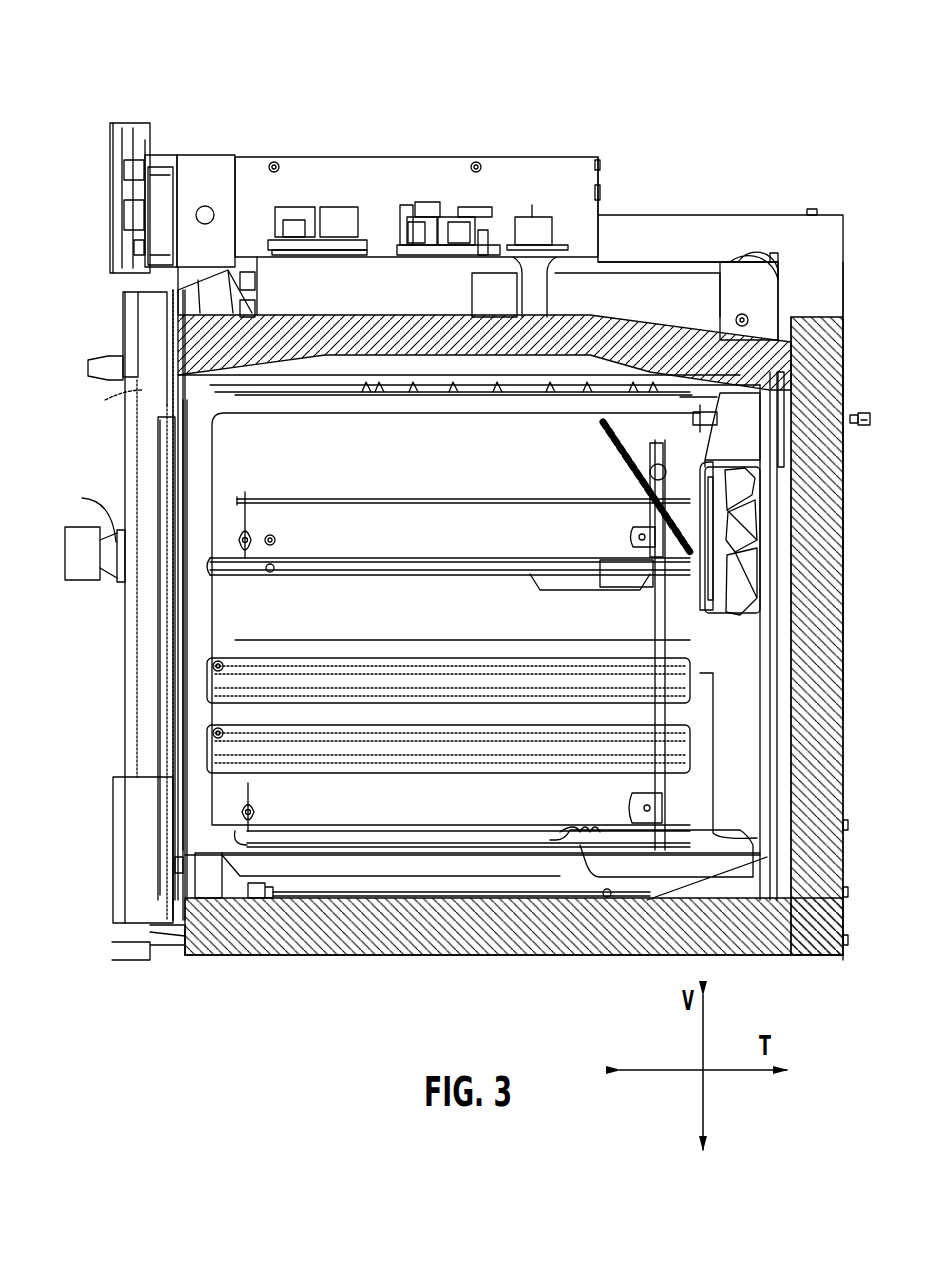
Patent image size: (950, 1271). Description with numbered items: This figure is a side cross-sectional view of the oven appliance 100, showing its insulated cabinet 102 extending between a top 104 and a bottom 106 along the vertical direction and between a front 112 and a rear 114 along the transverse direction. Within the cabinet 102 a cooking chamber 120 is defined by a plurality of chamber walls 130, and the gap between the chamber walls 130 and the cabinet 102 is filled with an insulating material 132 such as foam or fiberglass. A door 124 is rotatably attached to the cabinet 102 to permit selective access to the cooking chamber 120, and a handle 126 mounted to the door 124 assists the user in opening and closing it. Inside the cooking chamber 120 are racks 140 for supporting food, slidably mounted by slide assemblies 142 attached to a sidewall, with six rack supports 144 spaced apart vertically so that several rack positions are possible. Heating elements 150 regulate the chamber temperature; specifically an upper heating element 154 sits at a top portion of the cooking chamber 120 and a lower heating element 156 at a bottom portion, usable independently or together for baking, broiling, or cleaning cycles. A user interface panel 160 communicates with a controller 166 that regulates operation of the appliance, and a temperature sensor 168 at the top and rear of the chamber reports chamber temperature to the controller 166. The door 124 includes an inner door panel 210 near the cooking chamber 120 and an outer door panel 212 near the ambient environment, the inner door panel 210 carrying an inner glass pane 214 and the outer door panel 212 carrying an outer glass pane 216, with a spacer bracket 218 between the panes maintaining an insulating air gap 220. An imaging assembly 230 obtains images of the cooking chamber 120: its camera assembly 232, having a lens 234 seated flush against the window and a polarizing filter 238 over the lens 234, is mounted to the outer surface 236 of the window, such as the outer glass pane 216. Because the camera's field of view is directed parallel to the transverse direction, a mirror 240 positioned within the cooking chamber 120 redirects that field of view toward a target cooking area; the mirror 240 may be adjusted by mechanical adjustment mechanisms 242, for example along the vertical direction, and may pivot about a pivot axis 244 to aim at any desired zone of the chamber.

The oven appliance 100 is at (819, 102).
The cabinet 102 is at (843, 277).
The top 104 is at (851, 205).
The bottom 106 is at (866, 952).
The front 112 is at (112, 975).
The rear 114 is at (845, 970).
The cooking chamber 120 is at (440, 457).
The door 124 is at (112, 317).
The handle 126 is at (88, 369).
The chamber walls 130 is at (687, 448).
The insulating material 132 is at (822, 682).
The racks 140 is at (300, 565).
The slide assemblies 142 is at (510, 690).
The rack supports 144 is at (405, 572).
The heating elements 150 is at (585, 406).
The upper heating element 154 is at (520, 405).
The lower heating element 156 is at (555, 892).
The user interface panel 160 is at (105, 204).
The controller 166 is at (140, 198).
The temperature sensor 168 is at (717, 417).
The inner door panel 210 is at (165, 635).
The outer door panel 212 is at (122, 441).
The inner glass pane 214 is at (160, 692).
The outer glass pane 216 is at (123, 725).
The spacer bracket 218 is at (105, 400).
The air gap 220 is at (128, 770).
The imaging assembly 230 is at (37, 532).
The camera assembly 232 is at (62, 556).
The lens 234 is at (83, 512).
The outer surface 236 is at (123, 647).
The polarizing filter 238 is at (117, 585).
The mirror 240 is at (640, 433).
The mechanical adjustment mechanisms 242 is at (665, 452).
The pivot axis 244 is at (666, 476).